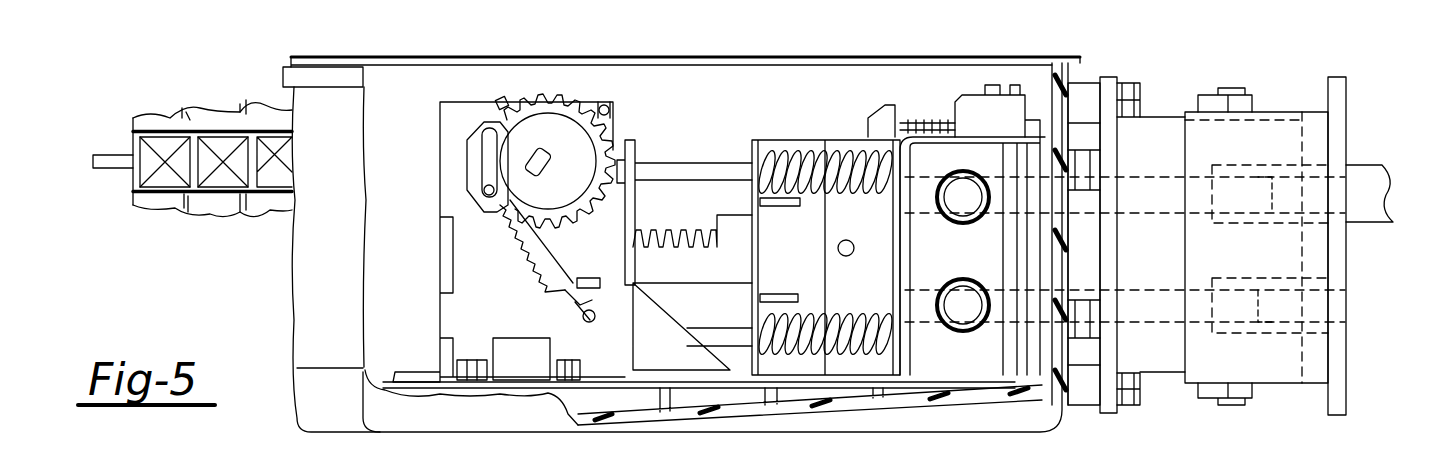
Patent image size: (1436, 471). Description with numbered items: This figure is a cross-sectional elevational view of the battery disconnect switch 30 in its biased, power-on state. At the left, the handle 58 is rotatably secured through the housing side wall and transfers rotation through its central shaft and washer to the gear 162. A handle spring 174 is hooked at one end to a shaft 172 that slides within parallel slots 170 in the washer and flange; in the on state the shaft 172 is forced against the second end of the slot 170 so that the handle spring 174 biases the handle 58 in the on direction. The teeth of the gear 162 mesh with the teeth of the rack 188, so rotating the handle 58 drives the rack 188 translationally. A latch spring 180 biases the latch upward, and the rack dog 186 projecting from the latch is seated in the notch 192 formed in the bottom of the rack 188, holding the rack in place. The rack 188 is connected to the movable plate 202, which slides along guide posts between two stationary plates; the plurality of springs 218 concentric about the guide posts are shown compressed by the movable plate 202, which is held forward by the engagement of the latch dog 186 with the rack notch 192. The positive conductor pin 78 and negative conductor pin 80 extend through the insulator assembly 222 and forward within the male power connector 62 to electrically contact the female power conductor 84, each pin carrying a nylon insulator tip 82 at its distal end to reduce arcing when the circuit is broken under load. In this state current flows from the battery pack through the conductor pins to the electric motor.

The handle 58 is at (225, 110).
The gear 162 is at (548, 92).
The slots 170 is at (492, 153).
The shaft 172 is at (485, 190).
The handle spring 174 is at (531, 262).
The rack dog 186 is at (573, 297).
The notch 192 is at (615, 280).
The latch spring 180 is at (618, 122).
The movable plate 202 is at (757, 152).
The battery disconnect switch 30 is at (790, 98).
The spring 218 is at (793, 160).
The rack 188 is at (735, 302).
The insulator assembly 222 is at (966, 270).
The male power connector 62 is at (1166, 118).
The positive conductor pin 78 is at (1140, 202).
The negative conductor pin 80 is at (1140, 310).
The insulator tip 82 is at (1266, 182).
The female power conductor 84 is at (1315, 115).